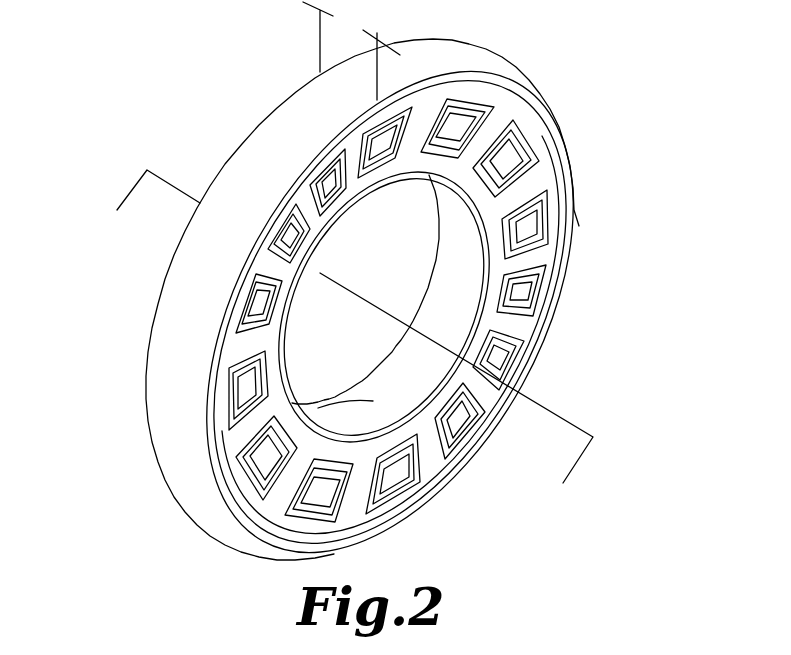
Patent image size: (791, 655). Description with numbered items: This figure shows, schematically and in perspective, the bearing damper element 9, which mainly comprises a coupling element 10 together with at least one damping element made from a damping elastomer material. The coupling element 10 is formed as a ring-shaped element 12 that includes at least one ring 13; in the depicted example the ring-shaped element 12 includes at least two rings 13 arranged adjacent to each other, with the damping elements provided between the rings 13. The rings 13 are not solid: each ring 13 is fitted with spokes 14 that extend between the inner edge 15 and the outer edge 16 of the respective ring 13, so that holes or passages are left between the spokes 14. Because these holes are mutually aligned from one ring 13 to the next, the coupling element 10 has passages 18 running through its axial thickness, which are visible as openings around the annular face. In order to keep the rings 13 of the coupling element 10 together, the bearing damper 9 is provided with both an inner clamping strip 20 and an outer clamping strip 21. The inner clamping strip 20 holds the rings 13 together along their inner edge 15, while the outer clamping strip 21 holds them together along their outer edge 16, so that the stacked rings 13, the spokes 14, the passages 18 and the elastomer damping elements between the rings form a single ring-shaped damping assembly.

The bearing damper element 9 is at (185, 76).
The coupling element 10 is at (515, 59).
The ring-shaped element 12 is at (400, 244).
The ring 13 is at (545, 131).
The spokes 14 is at (233, 440).
The inner edge 15 is at (490, 293).
The outer edge 16 is at (560, 253).
The passages 18 is at (390, 473).
The inner clamping strip 20 is at (240, 473).
The outer clamping strip 21 is at (278, 549).